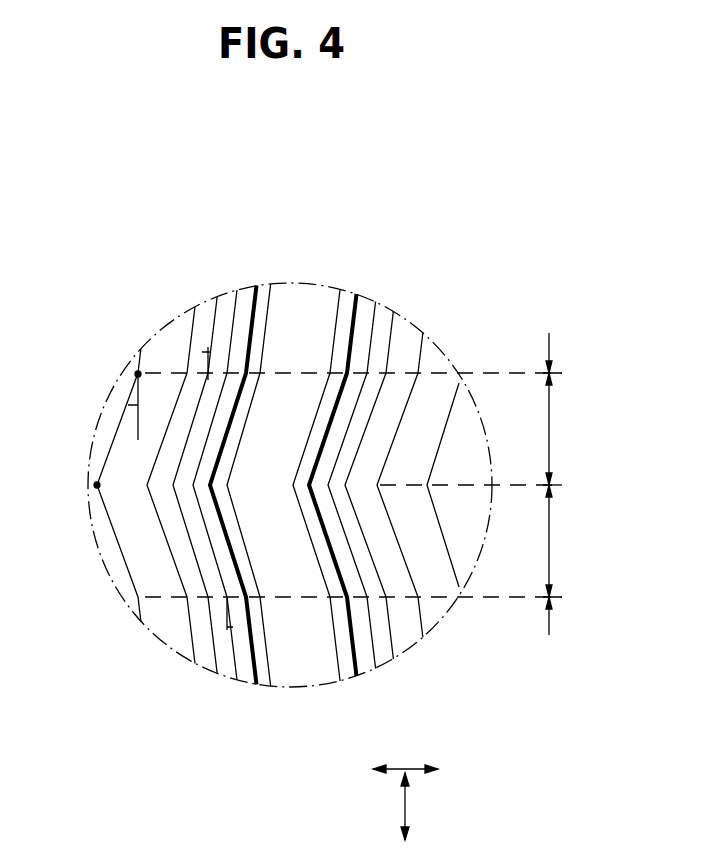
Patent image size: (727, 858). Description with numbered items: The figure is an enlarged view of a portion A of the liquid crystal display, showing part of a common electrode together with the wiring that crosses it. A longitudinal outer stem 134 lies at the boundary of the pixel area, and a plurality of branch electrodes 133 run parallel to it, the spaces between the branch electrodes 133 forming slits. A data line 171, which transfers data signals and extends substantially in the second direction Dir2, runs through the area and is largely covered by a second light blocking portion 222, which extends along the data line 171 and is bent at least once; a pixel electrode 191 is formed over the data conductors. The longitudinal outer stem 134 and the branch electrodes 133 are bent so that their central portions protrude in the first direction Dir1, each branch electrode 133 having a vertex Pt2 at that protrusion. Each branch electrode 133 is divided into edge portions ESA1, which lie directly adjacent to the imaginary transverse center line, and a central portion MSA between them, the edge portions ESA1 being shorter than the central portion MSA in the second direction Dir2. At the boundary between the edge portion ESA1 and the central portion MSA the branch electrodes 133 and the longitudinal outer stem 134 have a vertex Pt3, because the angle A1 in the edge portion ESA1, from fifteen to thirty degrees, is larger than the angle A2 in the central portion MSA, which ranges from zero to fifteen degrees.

The branch electrode 133 is at (160, 523).
The longitudinal outer stem 134 is at (220, 573).
The data line 171 is at (356, 298).
The pixel electrode 191 is at (210, 352).
The second light blocking portion 222 is at (327, 615).
The vertex Pt2 is at (97, 484).
The vertex Pt3 is at (138, 372).
The angle A1 is at (138, 413).
The angle A2 is at (214, 493).
The portion A is at (114, 245).
The central portion MSA is at (574, 485).
The edge portion ESA1 is at (576, 489).
The first direction Dir1 is at (427, 769).
The second direction Dir2 is at (430, 806).